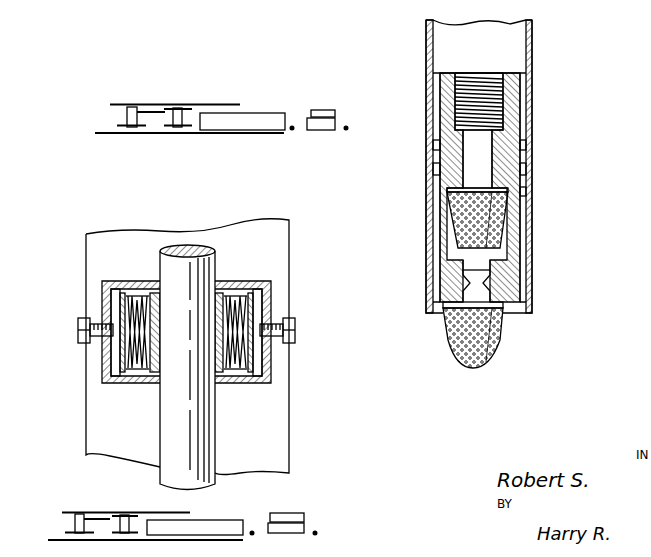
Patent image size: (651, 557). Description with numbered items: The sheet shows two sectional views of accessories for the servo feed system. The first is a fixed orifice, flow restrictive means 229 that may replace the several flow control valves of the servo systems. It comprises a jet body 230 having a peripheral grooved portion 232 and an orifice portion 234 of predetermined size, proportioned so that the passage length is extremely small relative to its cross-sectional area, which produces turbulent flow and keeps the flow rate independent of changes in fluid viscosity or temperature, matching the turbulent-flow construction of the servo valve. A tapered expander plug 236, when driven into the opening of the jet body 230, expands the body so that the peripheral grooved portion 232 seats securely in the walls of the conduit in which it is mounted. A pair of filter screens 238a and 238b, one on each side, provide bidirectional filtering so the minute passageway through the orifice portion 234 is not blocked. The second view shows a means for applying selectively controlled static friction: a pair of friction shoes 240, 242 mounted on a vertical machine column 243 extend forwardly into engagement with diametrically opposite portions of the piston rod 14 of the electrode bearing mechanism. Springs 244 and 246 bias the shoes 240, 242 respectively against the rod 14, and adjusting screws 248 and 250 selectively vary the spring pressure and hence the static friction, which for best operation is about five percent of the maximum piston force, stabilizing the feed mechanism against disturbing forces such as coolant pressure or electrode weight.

In FIG. 8, the fixed orifice flow restrictive means 229 is at (532, 252).
In FIG. 8, the jet body 230 is at (515, 227).
In FIG. 8, the peripheral grooved portion 232 is at (526, 177).
In FIG. 8, the orifice portion 234 is at (480, 283).
In FIG. 8, the tapered expander plug 236 is at (498, 142).
In FIG. 8, the filter screen 238a is at (447, 218).
In FIG. 8, the filter screen 238b is at (493, 345).
In FIG. 9, the piston rod 14 is at (192, 446).
In FIG. 9, the friction shoe 240 is at (150, 285).
In FIG. 9, the friction shoe 242 is at (220, 283).
In FIG. 9, the vertical machine column 243 is at (282, 268).
In FIG. 9, the spring 244 is at (130, 375).
In FIG. 9, the spring 246 is at (225, 375).
In FIG. 9, the adjusting screw 248 is at (78, 343).
In FIG. 9, the adjusting screw 250 is at (295, 327).